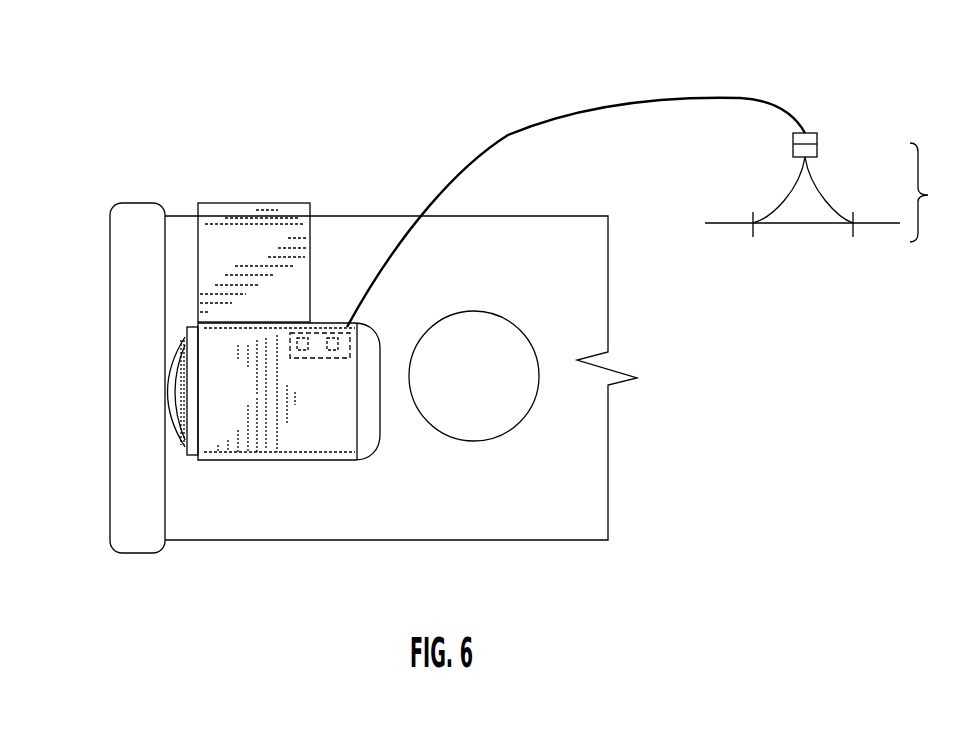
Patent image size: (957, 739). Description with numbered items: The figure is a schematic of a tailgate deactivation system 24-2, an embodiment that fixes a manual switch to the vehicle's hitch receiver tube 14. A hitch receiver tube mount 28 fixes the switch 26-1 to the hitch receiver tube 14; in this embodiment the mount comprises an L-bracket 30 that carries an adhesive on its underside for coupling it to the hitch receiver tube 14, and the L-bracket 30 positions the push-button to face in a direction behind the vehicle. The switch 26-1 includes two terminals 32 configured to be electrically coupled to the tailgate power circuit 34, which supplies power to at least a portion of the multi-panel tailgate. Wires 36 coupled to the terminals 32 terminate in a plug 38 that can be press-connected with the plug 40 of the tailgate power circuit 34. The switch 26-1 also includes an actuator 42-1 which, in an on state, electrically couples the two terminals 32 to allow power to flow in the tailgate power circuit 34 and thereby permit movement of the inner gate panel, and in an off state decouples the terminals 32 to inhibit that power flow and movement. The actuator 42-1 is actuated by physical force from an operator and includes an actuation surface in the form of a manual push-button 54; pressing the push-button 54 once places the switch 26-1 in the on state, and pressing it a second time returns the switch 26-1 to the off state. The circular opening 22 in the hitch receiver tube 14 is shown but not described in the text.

The hitch receiver tube 14 is at (558, 233).
The aperture 22 is at (522, 422).
The tailgate deactivation system 24-2 is at (288, 153).
The switch 26-1 is at (323, 418).
The hitch receiver tube mount 28 is at (272, 227).
The L-bracket 30 is at (293, 292).
The two terminals 32 is at (337, 352).
The tailgate power circuit 34 is at (830, 192).
The wires 36 is at (508, 135).
The plug 38 is at (807, 126).
The plug 40 is at (792, 152).
The actuator 42-1 is at (108, 375).
The manual push-button 54 is at (172, 393).